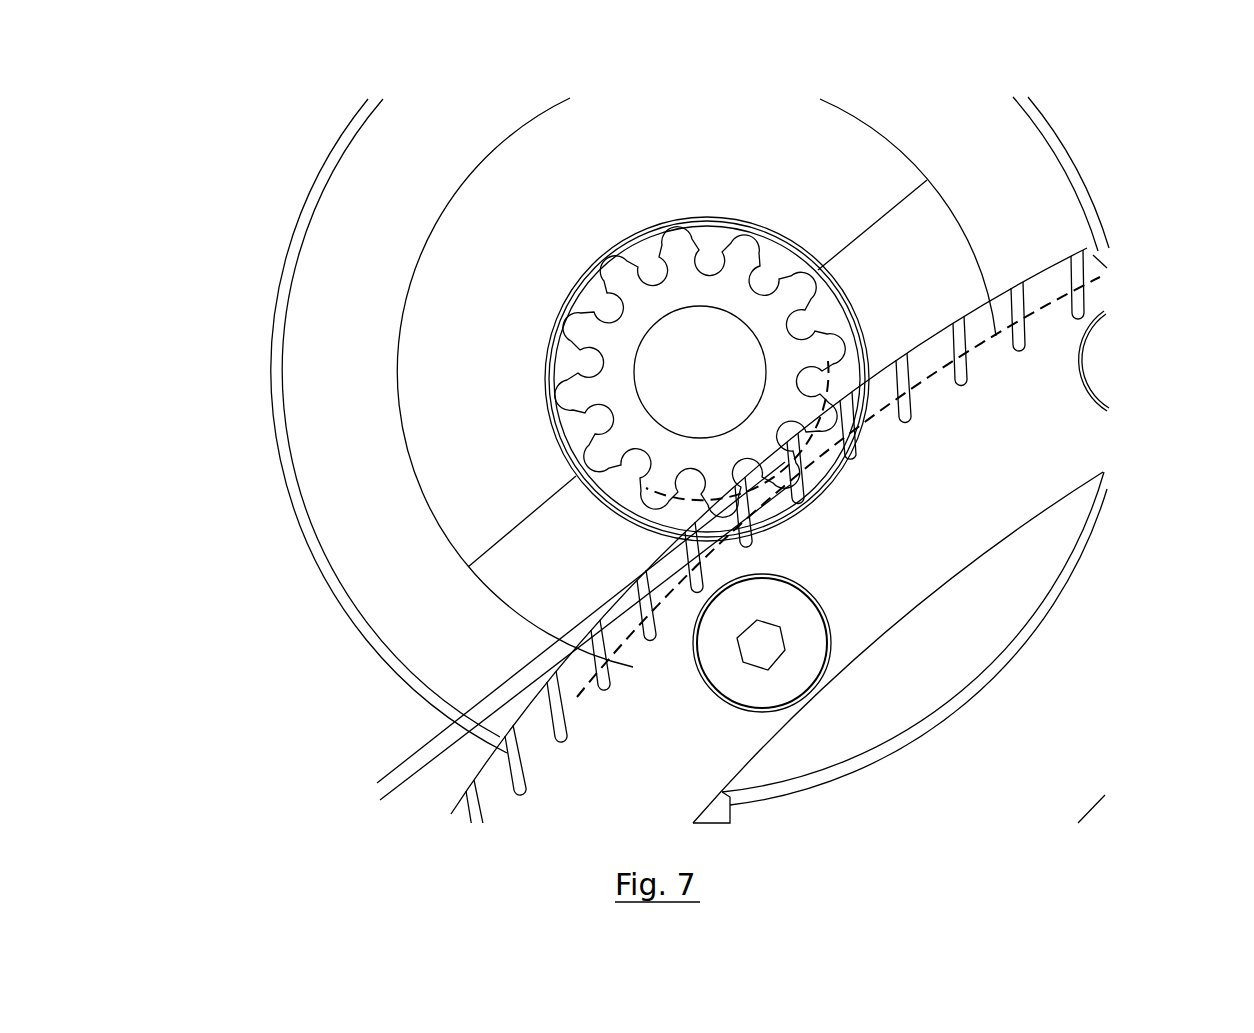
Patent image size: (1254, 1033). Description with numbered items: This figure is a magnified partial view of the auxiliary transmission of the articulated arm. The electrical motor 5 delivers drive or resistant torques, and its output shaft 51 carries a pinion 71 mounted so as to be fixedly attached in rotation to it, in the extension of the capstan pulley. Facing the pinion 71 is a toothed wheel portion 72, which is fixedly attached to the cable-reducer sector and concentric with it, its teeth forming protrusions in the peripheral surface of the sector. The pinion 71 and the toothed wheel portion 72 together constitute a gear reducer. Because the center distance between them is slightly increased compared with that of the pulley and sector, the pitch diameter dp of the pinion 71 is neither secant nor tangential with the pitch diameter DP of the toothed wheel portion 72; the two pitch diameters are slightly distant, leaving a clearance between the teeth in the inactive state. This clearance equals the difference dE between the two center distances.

The electrical motor 5 is at (357, 212).
The output shaft 51 is at (663, 375).
The pinion 71 is at (747, 250).
The toothed wheel portion 72 is at (1027, 437).
The pitch diameter of the pinion dp is at (843, 377).
The pitch diameter of the toothed wheel portion DP is at (1100, 288).
The difference in center distance dE is at (410, 823).